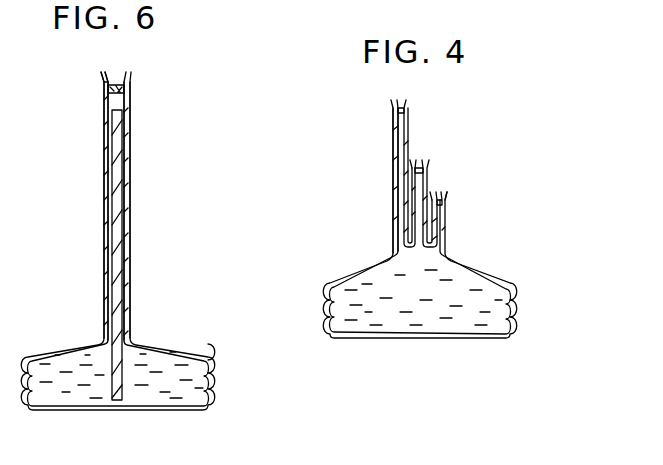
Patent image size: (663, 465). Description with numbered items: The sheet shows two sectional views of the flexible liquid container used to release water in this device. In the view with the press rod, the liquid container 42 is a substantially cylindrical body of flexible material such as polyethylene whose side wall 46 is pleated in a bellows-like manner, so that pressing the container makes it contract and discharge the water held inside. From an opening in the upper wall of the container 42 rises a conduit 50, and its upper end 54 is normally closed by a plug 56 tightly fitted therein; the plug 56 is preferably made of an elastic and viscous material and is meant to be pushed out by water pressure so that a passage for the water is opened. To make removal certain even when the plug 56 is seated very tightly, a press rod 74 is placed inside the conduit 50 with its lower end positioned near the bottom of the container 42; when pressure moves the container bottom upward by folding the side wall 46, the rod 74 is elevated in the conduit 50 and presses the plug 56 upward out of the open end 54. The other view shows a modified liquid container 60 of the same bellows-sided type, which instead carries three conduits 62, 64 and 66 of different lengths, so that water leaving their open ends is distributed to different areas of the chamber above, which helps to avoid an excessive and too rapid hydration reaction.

In FIG. 6, the liquid container 42 is at (173, 352).
In FIG. 6, the side wall 46 is at (210, 385).
In FIG. 6, the conduit 50 is at (128, 212).
In FIG. 6, the upper end 54 is at (103, 89).
In FIG. 6, the plug 56 is at (126, 80).
In FIG. 6, the press rod 74 is at (118, 296).
In FIG. 4, the liquid container 60 is at (488, 267).
In FIG. 4, the conduit 62 is at (395, 192).
In FIG. 4, the conduit 64 is at (427, 170).
In FIG. 4, the conduit 66 is at (445, 223).